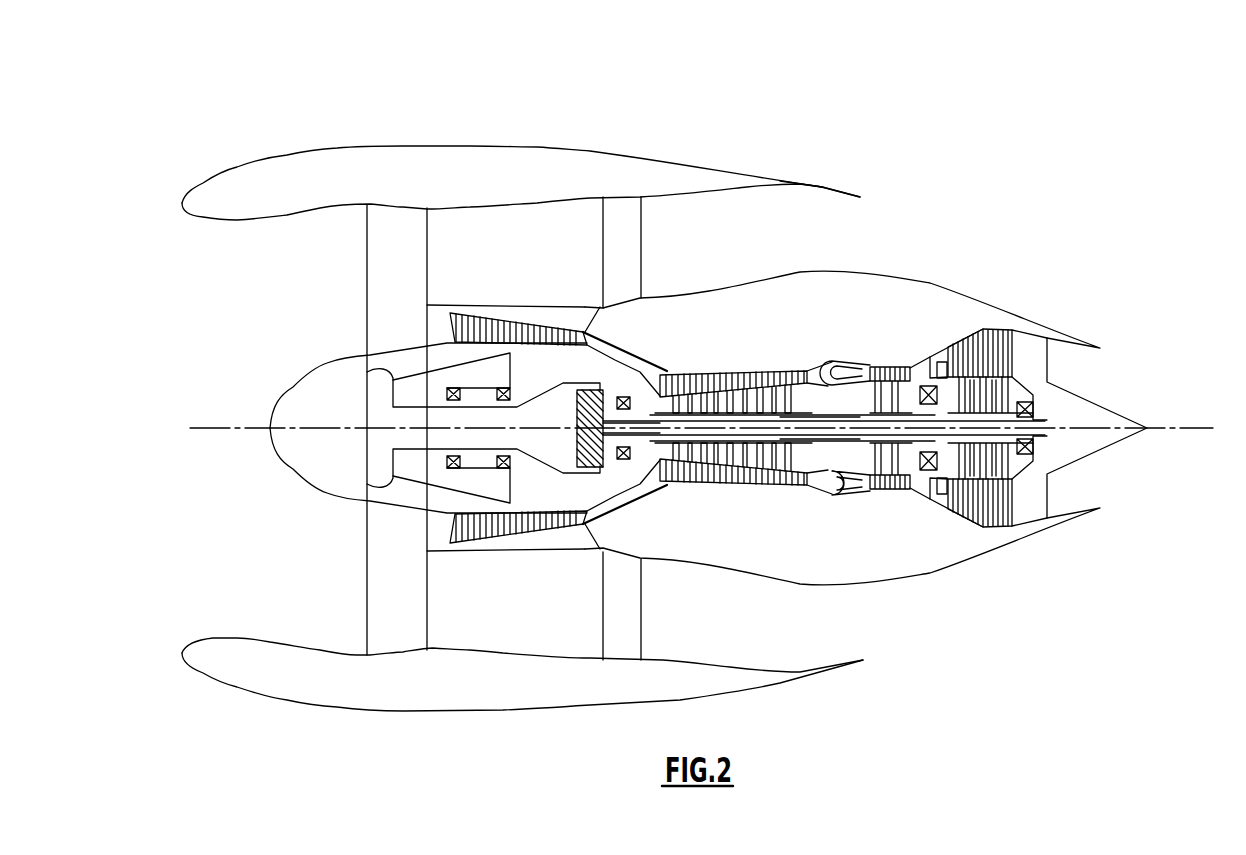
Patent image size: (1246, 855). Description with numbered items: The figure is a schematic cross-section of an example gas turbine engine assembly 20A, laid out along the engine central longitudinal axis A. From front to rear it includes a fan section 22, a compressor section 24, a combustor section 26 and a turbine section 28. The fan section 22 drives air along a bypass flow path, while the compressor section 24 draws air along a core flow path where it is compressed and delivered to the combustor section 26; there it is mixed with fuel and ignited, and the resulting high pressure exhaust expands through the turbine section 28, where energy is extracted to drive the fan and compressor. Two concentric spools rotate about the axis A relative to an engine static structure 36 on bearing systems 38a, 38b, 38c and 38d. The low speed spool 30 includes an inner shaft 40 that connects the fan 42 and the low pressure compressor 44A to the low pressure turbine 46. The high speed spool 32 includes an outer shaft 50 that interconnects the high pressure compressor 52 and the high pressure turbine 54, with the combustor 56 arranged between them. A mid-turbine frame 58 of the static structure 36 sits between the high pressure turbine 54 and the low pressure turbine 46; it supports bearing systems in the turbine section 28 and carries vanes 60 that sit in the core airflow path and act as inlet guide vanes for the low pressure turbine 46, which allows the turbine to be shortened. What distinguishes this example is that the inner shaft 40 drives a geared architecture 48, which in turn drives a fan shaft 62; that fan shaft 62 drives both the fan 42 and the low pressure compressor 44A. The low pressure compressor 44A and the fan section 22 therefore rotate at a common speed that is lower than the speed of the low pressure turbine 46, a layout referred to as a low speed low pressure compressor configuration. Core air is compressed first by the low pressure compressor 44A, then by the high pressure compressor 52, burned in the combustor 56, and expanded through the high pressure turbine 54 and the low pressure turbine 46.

The engine assembly 20A is at (840, 159).
The fan section 22 is at (512, 126).
The compressor section 24 is at (711, 298).
The combustor section 26 is at (833, 335).
The turbine section 28 is at (985, 321).
The low speed spool 30 is at (650, 458).
The high speed spool 32 is at (825, 400).
The engine static structure 36 is at (917, 364).
The bearing system 38a is at (490, 470).
The bearing system 38b is at (620, 462).
The bearing system 38c is at (900, 472).
The bearing system 38d is at (1035, 452).
The inner shaft 40 is at (694, 440).
The fan 42 is at (413, 294).
The low pressure compressor 44A is at (505, 330).
The low pressure turbine 46 is at (1005, 347).
The geared architecture 48 is at (609, 378).
The outer shaft 50 is at (843, 400).
The high pressure compressor 52 is at (753, 373).
The high pressure turbine 54 is at (904, 366).
The combustor 56 is at (840, 373).
The mid-turbine frame 58 is at (937, 345).
The vanes 60 is at (942, 362).
The fan shaft 62 is at (373, 387).
The engine central longitudinal axis A is at (1183, 422).